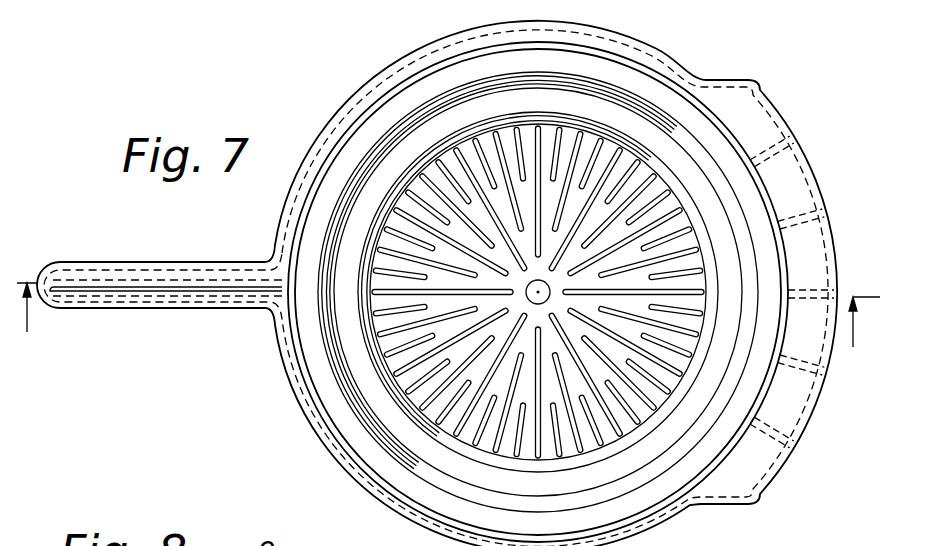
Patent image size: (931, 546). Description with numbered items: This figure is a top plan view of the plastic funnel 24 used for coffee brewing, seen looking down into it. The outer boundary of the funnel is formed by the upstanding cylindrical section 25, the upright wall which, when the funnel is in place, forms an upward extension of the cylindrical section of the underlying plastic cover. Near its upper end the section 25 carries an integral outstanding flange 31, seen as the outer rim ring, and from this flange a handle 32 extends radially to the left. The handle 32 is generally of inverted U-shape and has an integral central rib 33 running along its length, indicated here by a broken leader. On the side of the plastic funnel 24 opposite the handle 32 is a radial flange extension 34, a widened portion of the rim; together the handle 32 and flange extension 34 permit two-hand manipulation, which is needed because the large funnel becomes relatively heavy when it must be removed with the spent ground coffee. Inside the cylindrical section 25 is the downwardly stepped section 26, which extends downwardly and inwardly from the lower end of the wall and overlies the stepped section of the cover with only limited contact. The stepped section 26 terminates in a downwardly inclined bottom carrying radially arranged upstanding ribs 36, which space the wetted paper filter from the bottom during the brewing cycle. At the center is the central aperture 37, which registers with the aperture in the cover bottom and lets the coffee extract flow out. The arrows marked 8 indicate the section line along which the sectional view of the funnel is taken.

The plastic funnel 24 is at (318, 89).
The upstanding cylindrical section 25 is at (657, 72).
The downwardly stepped section 26 is at (343, 405).
The outstanding flange 31 is at (400, 514).
The handle 32 is at (148, 309).
The central rib 33 is at (185, 283).
The radial flange extension 34 is at (830, 236).
The upstanding ribs 36 is at (476, 270).
The central aperture 37 is at (548, 289).
The section line 8- 8 is at (448, 319).